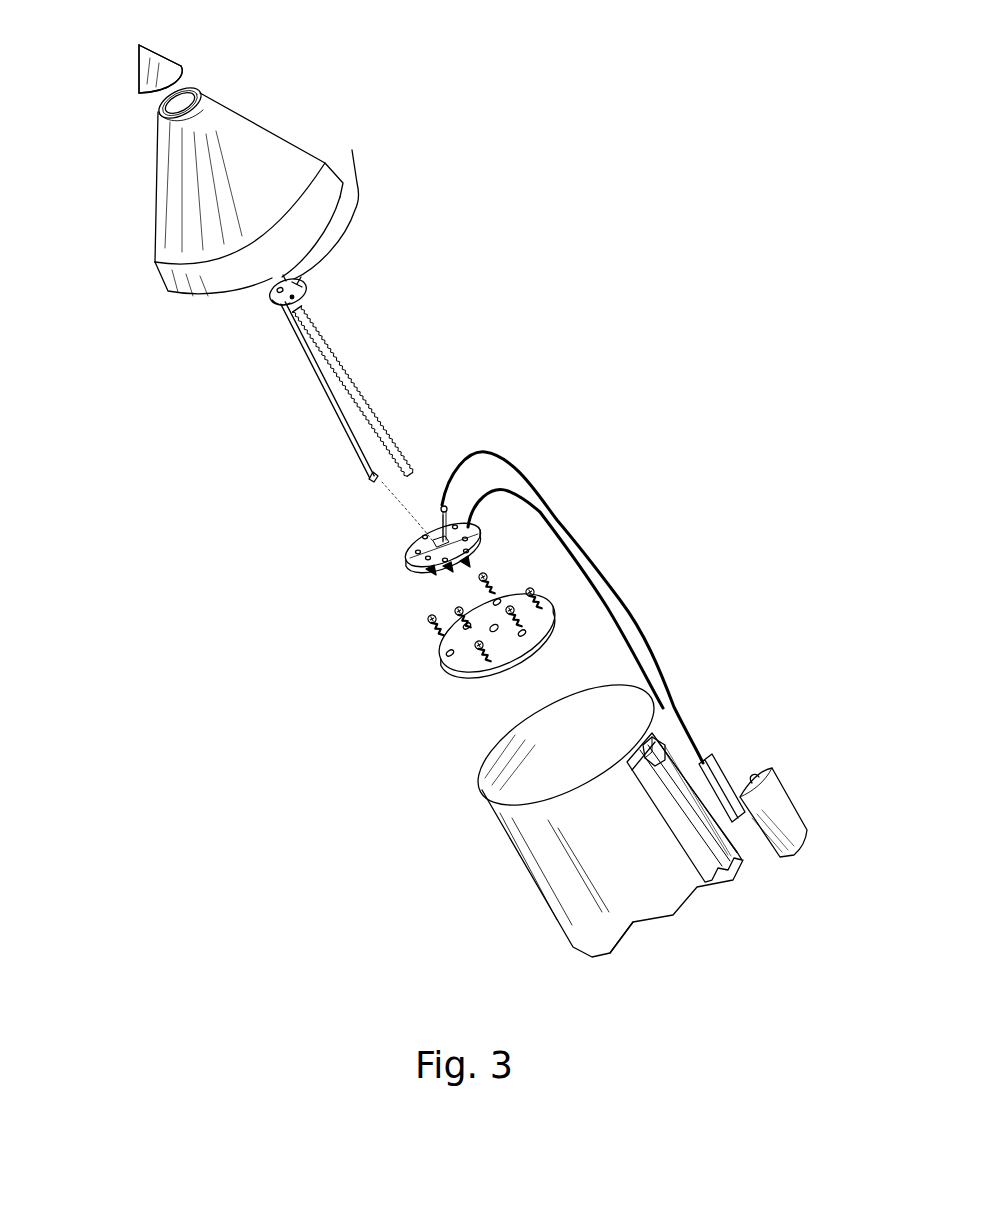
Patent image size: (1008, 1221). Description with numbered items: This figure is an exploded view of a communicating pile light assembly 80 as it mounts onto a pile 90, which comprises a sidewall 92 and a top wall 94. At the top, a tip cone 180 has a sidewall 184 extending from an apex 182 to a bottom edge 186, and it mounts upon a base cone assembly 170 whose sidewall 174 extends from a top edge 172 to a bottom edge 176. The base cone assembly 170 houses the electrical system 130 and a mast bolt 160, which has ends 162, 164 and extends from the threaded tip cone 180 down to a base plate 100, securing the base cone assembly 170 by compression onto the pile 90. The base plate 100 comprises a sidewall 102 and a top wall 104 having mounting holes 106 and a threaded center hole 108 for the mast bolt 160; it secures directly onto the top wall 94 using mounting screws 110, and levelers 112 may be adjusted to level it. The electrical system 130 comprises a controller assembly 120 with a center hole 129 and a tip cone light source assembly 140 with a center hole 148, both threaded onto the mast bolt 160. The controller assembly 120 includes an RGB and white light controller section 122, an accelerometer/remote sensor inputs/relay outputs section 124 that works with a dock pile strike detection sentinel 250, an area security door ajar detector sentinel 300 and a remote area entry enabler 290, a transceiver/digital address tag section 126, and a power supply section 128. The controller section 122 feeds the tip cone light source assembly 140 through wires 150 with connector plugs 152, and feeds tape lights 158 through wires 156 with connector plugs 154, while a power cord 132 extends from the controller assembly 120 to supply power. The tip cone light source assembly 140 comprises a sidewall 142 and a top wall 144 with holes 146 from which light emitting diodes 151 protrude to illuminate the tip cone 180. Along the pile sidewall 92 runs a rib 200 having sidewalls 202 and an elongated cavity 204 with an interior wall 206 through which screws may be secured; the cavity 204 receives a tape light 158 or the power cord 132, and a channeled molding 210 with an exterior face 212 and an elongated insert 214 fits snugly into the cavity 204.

The communicating pile light assembly 80 is at (758, 114).
The pile 90 is at (526, 808).
The sidewall 92 is at (600, 847).
The top wall 94 is at (527, 734).
The base plate 100 is at (424, 646).
The sidewall 102 is at (450, 672).
The top wall 104 is at (443, 651).
The mounting holes 106 is at (450, 655).
The center hole 108 is at (498, 630).
The mounting screws 110 is at (433, 628).
The levelers 112 is at (528, 592).
The controller assembly 120 is at (408, 493).
The RGB and white light controller section 122 is at (438, 547).
The accelerometer/remote sensor inputs/relay outputs section 124 is at (412, 563).
The transceiver/digital address tag section 126 is at (406, 552).
The power supply section 128 is at (462, 563).
The center hole 129 is at (436, 508).
The electrical system 130 is at (614, 581).
The power cord 132 is at (602, 614).
The tip cone light source assembly 140 is at (301, 271).
The sidewall 142 is at (305, 296).
The top wall 144 is at (268, 300).
The holes 146 is at (262, 306).
The center hole 148 is at (304, 290).
The wires 150 is at (282, 326).
The light emitting diodes 151 is at (300, 277).
The connector plugs 152 is at (371, 476).
The connector plugs 154 is at (445, 505).
The wires 156 is at (557, 521).
The tape lights 158 is at (715, 775).
The mast bolt 160 is at (386, 413).
The end 162 is at (304, 306).
The end 164 is at (404, 477).
The base cone assembly 170 is at (262, 189).
The top edge 172 is at (162, 108).
The sidewall 174 is at (258, 143).
The bottom edge 176 is at (352, 180).
The tip cone 180 is at (132, 70).
The apex 182 is at (150, 44).
The sidewall 184 is at (140, 80).
The bottom edge 186 is at (183, 70).
The rib 200 is at (619, 828).
The sidewalls 202 is at (665, 822).
The elongated cavity 204 is at (650, 738).
The interior wall 206 is at (648, 752).
The channeled molding 210 is at (801, 780).
The exterior face 212 is at (790, 826).
The elongated insert 214 is at (754, 780).
The dock pile strike detection sentinel 250 is at (448, 572).
The remote area entry enabler 290 is at (467, 567).
The area security door ajar detector sentinel 300 is at (433, 572).